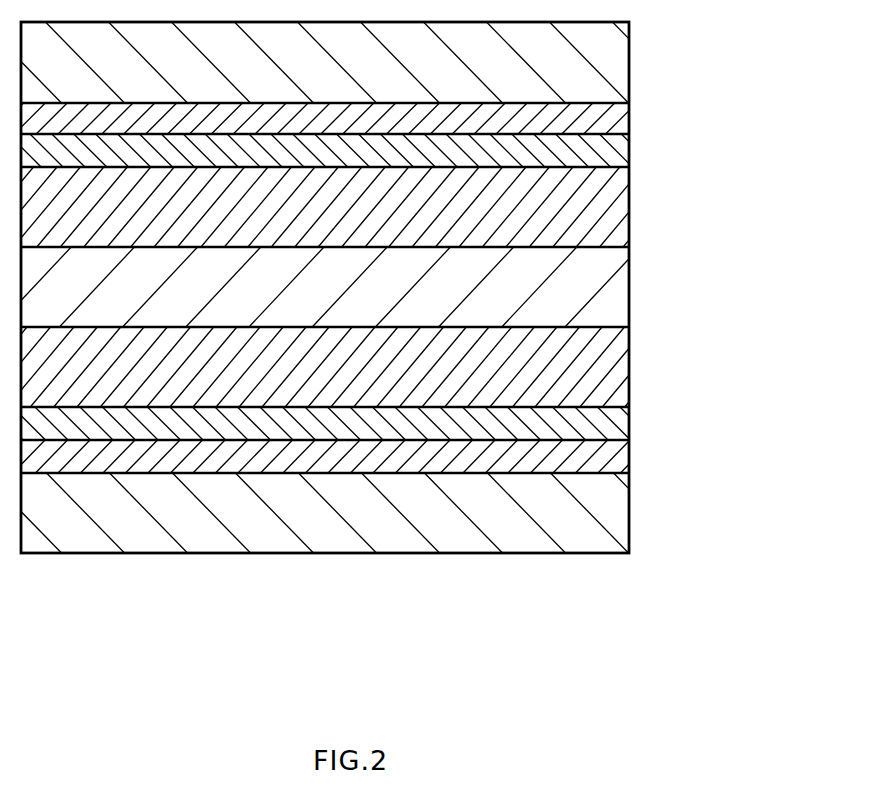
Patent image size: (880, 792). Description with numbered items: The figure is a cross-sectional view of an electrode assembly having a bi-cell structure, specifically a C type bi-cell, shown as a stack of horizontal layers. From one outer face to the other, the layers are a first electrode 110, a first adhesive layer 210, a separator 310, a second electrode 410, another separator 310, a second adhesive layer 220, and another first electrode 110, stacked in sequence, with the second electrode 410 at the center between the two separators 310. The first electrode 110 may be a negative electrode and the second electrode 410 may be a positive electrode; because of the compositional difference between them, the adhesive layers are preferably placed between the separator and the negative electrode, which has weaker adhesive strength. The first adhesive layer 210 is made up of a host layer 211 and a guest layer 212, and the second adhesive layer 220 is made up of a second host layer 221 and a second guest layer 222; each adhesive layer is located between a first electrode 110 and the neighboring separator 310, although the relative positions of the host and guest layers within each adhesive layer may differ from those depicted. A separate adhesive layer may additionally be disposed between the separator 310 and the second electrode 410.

The first electrode 110 is at (620, 63).
The first adhesive layer 210 is at (388, 440).
The host layer 211 is at (620, 455).
The guest layer 212 is at (620, 421).
The second adhesive layer 220 is at (388, 135).
The second host layer 221 is at (620, 118).
The second guest layer 222 is at (620, 150).
The separator 310 is at (620, 205).
The second electrode 410 is at (620, 285).